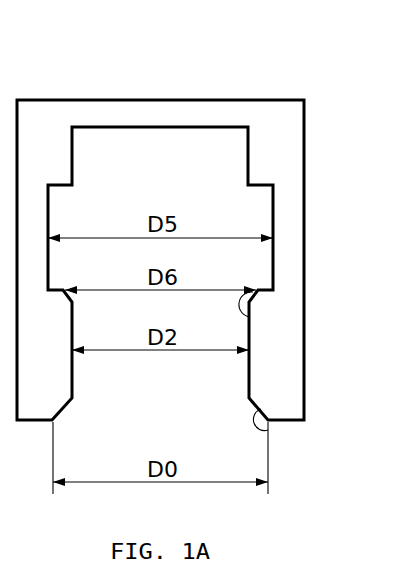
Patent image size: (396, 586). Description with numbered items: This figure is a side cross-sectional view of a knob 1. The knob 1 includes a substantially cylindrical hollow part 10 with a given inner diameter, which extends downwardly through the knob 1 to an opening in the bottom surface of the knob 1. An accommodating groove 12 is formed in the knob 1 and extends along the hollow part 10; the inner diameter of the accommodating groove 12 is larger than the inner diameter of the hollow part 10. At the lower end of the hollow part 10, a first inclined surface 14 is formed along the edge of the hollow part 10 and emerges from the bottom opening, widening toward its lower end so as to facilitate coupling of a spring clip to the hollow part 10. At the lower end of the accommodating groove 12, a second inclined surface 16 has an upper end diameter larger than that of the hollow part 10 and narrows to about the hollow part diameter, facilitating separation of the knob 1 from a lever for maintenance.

The knob 1 is at (304, 97).
The hollow part 10 is at (158, 142).
The accommodating groove 12 is at (262, 208).
The first inclined surface 14 is at (262, 434).
The second inclined surface 16 is at (250, 317).